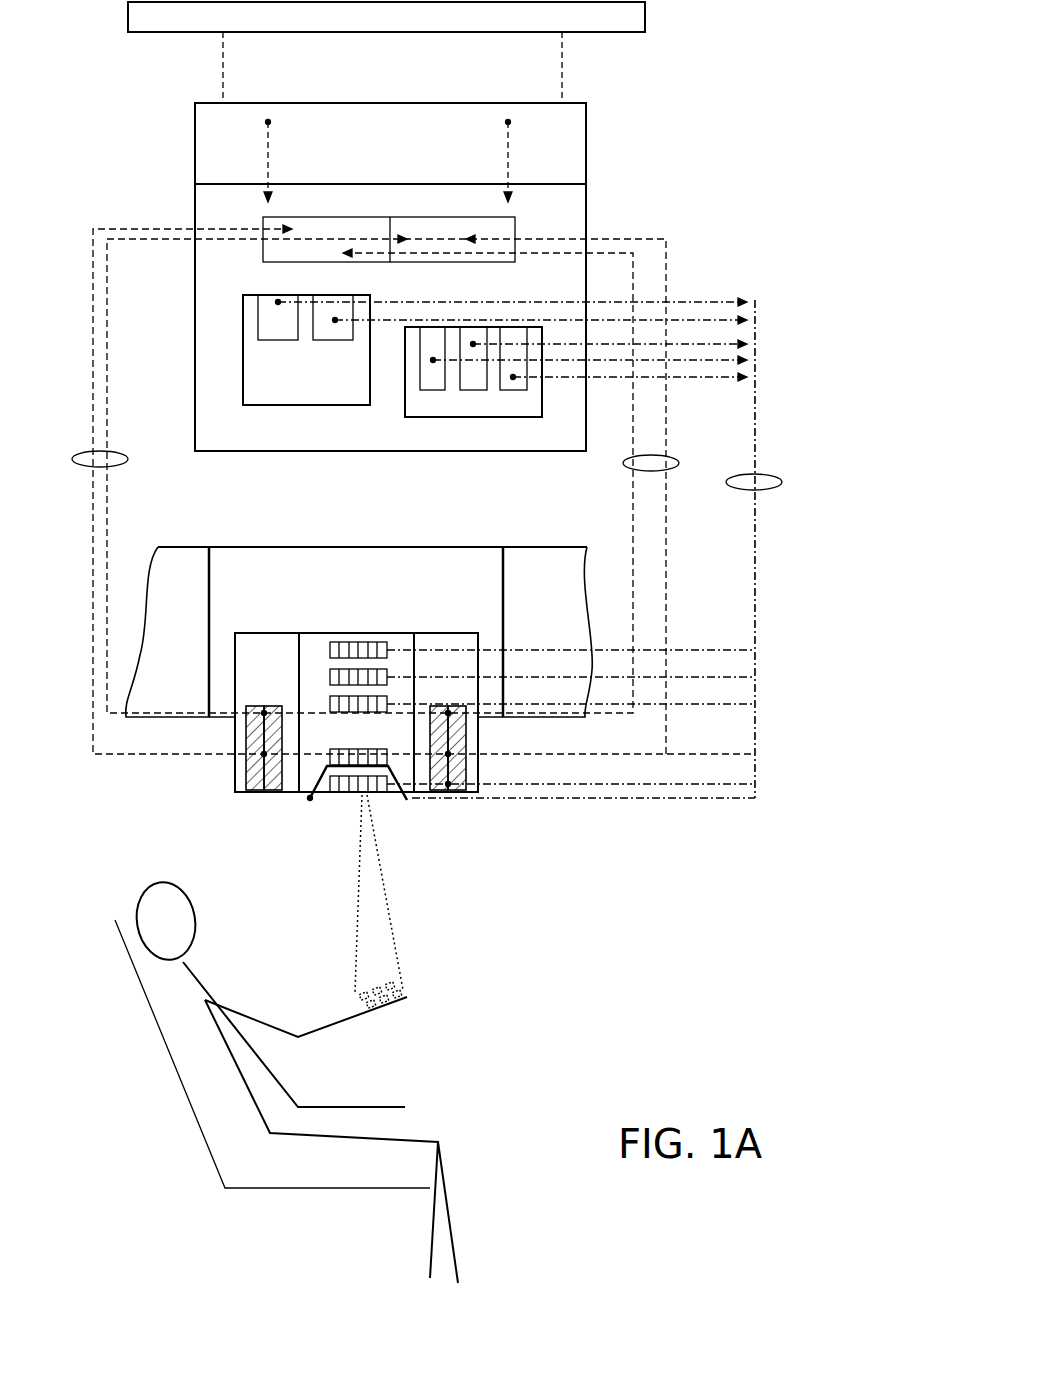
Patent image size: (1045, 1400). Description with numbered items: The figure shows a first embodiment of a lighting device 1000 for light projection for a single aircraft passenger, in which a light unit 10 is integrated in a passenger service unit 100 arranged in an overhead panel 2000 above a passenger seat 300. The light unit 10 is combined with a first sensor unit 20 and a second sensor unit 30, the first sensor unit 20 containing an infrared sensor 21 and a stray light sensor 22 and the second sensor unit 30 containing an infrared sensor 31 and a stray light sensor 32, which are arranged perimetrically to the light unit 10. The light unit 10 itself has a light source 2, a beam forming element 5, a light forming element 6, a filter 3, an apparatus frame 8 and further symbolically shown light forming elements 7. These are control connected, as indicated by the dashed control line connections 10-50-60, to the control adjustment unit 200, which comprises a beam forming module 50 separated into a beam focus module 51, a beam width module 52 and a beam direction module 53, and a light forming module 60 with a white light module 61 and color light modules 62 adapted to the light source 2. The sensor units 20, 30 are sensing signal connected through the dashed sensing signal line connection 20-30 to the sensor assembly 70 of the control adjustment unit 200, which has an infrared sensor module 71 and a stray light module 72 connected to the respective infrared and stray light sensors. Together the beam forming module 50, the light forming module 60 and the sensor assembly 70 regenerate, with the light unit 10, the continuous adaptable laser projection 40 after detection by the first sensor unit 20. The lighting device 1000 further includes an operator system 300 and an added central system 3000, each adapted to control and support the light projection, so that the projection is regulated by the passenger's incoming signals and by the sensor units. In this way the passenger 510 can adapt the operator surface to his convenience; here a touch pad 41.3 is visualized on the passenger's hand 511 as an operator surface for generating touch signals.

The central system 3000 is at (647, 11).
The lighting device 1000 is at (708, 150).
The operator system 300 is at (586, 112).
The control adjustment unit 200 is at (586, 203).
The sensor assembly 70 is at (250, 256).
The infrared sensor module 71 is at (264, 229).
The stray light module 72 is at (515, 236).
The light forming module 60 is at (243, 372).
The white light module 61 is at (265, 340).
The color light modules 62 is at (347, 340).
The beam forming module 50 is at (455, 417).
The beam focus module 51 is at (433, 390).
The beam width module 52 is at (480, 390).
The beam direction module 53 is at (520, 390).
The control line connections 10-50-60 is at (780, 477).
The sensing signal line connection 20-30 is at (123, 466).
The passenger service unit 100 is at (330, 547).
The overhead panel 2000 is at (538, 547).
The light unit 10 is at (318, 633).
The first sensor unit 20 is at (270, 633).
The second sensor unit 30 is at (455, 633).
The light source 2 is at (352, 642).
The beam forming element 5 is at (331, 681).
The light forming element 6 is at (331, 707).
The light forming elements 7 is at (331, 758).
The filter 3 is at (383, 795).
The apparatus frame 8 is at (312, 801).
The infrared sensor 21 is at (253, 793).
The stray light sensor 22 is at (275, 793).
The infrared sensor 31 is at (440, 793).
The stray light sensor 32 is at (460, 793).
The laser projection 40 is at (350, 885).
The touch pad 41.3 is at (398, 985).
The passenger's hand 511 is at (395, 1004).
The passenger 510 is at (412, 1140).